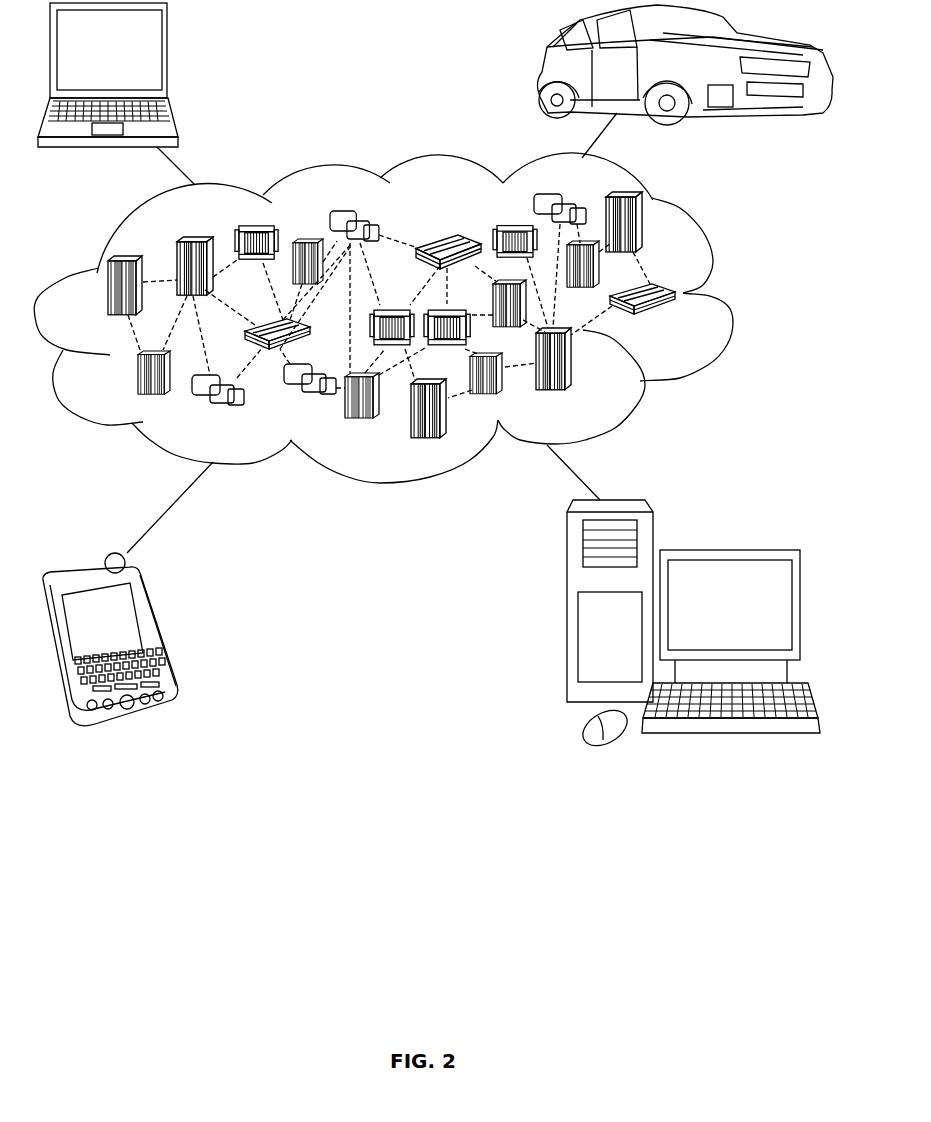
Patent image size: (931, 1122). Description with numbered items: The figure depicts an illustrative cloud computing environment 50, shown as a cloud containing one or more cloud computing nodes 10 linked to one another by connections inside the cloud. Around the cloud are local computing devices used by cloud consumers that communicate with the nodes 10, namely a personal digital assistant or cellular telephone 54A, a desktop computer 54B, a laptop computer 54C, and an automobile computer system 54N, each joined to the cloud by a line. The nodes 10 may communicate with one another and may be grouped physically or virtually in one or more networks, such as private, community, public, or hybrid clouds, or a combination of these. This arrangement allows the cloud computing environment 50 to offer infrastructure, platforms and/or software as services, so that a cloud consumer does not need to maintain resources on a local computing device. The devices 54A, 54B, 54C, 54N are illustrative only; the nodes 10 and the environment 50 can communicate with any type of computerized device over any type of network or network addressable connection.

The personal digital assistant or cellular telephone 54A is at (157, 630).
The desktop computer 54B is at (727, 548).
The laptop computer 54C is at (168, 62).
The automobile computer system 54N is at (542, 72).
The cloud computing environment 50 is at (730, 297).
The cloud computing node 10 is at (684, 324).